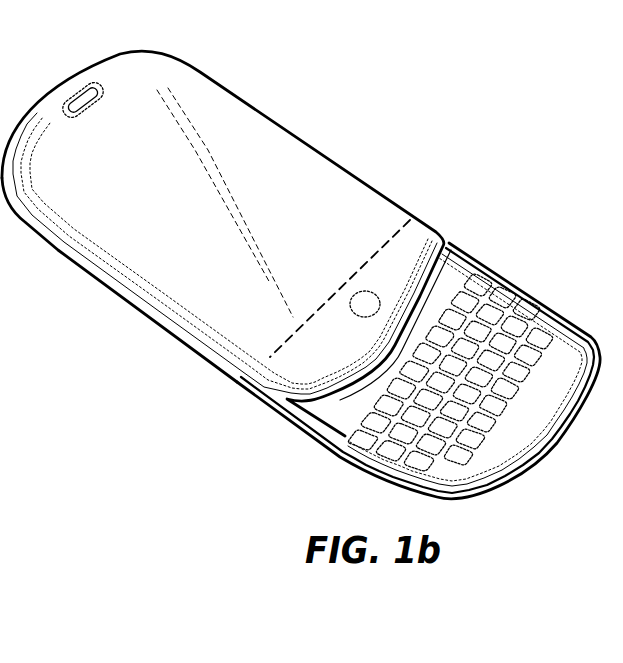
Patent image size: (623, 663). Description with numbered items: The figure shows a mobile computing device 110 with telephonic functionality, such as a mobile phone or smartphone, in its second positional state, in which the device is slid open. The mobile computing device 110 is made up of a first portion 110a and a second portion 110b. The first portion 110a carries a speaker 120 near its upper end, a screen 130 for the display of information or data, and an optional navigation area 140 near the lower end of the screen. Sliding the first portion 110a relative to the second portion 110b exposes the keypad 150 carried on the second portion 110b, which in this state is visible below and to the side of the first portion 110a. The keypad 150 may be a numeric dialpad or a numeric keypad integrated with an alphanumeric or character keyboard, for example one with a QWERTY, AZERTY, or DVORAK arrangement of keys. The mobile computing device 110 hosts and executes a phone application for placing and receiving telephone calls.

The mobile computing device 110 is at (301, 275).
The first portion 110a is at (292, 128).
The second portion 110b is at (263, 406).
The speaker 120 is at (82, 92).
The screen 130 is at (337, 173).
The navigation area 140 is at (337, 311).
The keypad 150 is at (540, 328).